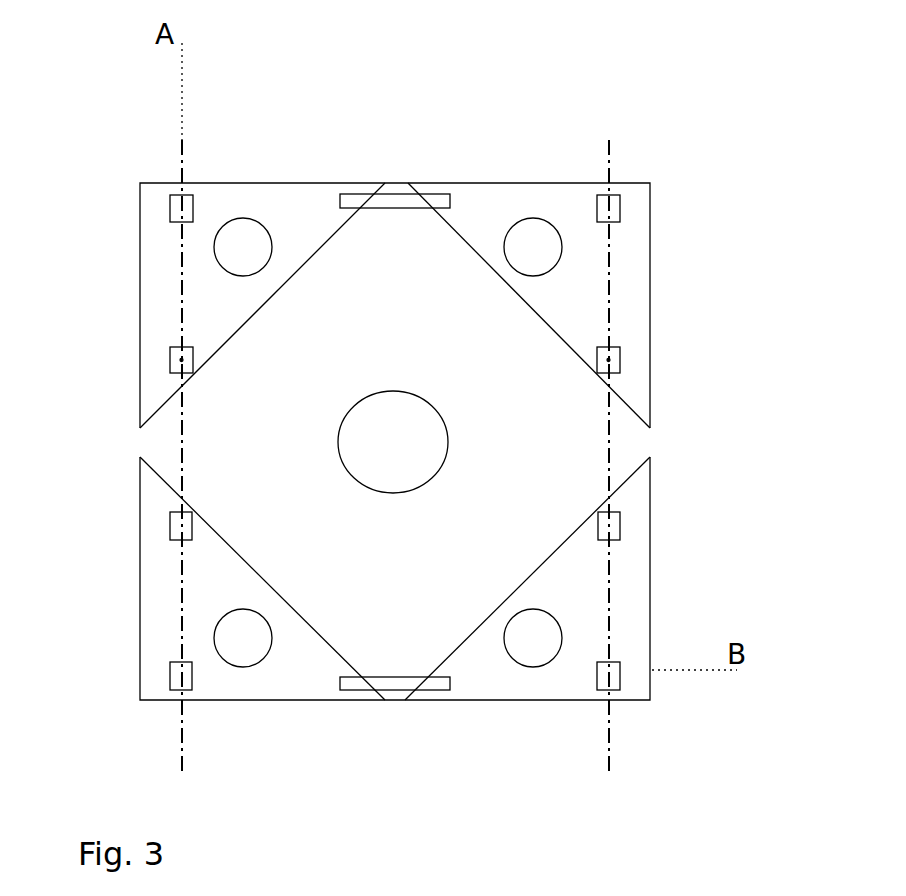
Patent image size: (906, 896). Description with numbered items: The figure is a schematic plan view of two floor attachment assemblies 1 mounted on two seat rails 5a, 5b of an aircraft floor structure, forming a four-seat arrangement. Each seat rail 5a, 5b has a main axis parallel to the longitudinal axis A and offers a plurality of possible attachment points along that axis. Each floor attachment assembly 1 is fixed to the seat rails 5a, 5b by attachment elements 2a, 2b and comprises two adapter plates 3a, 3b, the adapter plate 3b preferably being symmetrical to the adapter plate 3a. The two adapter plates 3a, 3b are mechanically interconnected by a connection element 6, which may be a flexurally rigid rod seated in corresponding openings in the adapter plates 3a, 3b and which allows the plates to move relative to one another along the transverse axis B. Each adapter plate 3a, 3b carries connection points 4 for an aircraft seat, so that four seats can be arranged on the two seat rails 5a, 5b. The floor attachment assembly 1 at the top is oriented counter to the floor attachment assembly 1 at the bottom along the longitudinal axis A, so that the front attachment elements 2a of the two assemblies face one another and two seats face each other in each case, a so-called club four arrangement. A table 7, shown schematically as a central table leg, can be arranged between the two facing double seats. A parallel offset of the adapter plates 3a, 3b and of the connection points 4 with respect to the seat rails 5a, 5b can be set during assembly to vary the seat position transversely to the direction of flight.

The floor attachment assembly 1 is at (663, 295).
The front attachment elements 2a is at (170, 360).
The attachment elements 2b is at (170, 208).
The adapter plate 3a is at (290, 253).
The adapter plate 3b is at (472, 223).
The connection points 4 is at (265, 270).
The seat rail 5a is at (182, 450).
The seat rail 5b is at (607, 440).
The connection element 6 is at (390, 190).
The table 7 is at (425, 452).